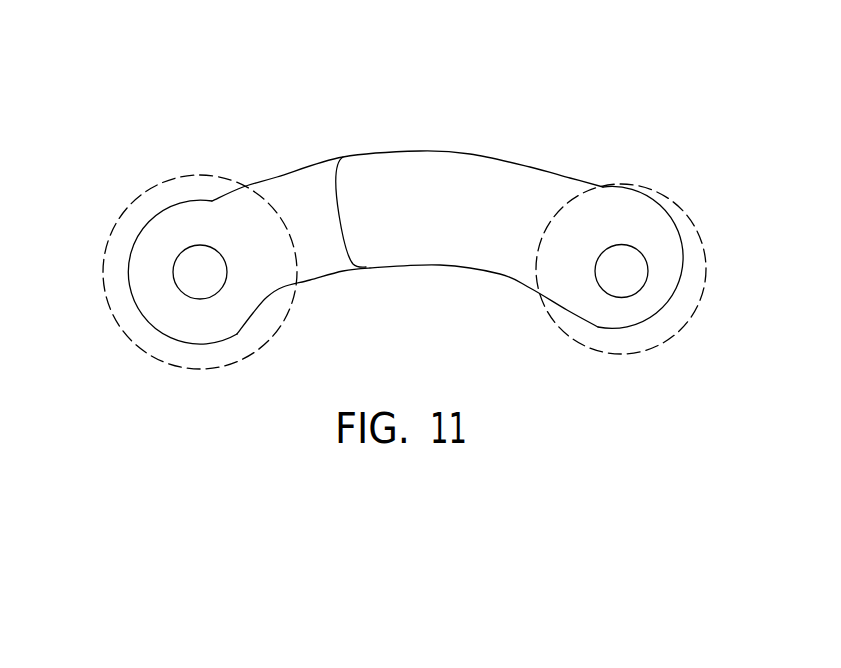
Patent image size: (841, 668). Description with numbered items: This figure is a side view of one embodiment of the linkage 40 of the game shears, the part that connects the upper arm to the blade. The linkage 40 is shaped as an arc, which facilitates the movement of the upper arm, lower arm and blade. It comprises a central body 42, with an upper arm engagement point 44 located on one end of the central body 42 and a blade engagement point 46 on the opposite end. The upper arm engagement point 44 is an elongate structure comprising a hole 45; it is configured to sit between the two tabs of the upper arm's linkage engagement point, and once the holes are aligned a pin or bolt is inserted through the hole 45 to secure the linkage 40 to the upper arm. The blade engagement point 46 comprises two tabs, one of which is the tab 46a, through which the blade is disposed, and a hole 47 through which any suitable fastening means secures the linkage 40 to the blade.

The linkage 40 is at (580, 68).
The central body 42 is at (613, 123).
The upper arm engagement point 44 is at (102, 283).
The hole 45 is at (198, 270).
The blade engagement point 46 is at (707, 278).
The tab 46a is at (490, 237).
The hole 47 is at (617, 272).